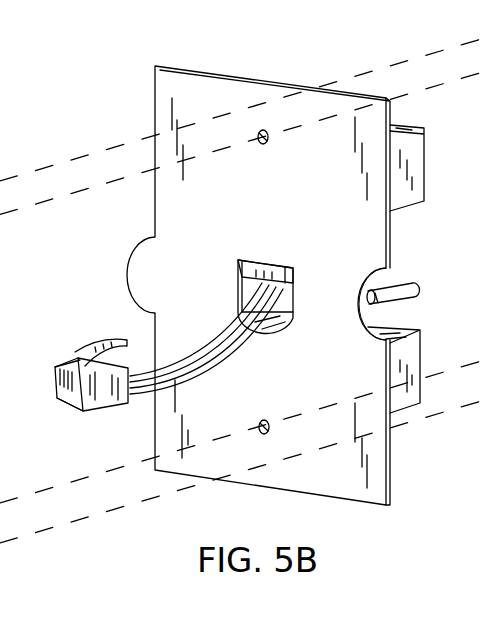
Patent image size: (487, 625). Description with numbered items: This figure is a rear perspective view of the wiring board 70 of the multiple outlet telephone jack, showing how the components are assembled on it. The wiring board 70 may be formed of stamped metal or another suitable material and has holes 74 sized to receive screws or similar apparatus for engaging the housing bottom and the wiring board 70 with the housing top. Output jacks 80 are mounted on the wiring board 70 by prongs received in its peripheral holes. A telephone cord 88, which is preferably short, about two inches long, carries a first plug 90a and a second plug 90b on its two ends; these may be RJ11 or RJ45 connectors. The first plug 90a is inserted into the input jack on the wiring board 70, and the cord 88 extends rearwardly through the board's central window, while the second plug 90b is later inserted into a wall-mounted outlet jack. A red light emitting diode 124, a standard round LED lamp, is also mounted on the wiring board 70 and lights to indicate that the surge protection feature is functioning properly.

The wiring board 70 is at (267, 66).
The holes 74 is at (263, 437).
The output jacks 80 is at (413, 163).
The telephone cord 88 is at (148, 368).
The first plug 90a is at (237, 262).
The second plug 90b is at (64, 362).
The light emitting diode 124 is at (400, 282).